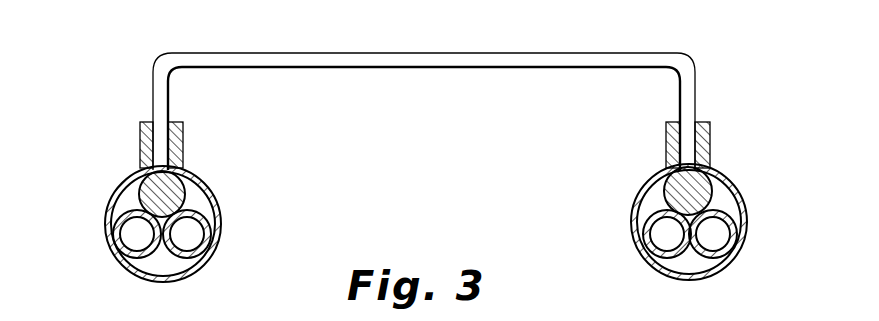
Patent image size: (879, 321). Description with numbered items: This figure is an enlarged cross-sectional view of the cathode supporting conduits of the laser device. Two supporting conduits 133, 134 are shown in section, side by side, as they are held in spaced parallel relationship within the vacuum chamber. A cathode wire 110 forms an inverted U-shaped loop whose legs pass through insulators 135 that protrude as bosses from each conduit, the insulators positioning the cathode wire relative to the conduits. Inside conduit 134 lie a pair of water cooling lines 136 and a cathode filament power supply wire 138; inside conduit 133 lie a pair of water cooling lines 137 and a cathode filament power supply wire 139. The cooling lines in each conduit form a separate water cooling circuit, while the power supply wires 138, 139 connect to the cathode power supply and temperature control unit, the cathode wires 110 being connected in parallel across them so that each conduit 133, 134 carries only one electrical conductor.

The cathode wires 110 is at (594, 53).
The insulators 135 is at (184, 127).
The supporting conduit 134 is at (112, 188).
The cathode filament power supply wire 138 is at (186, 197).
The water cooling lines 136 is at (110, 226).
The supporting conduit 133 is at (735, 179).
The cathode filament power supply wire 139 is at (666, 192).
The water cooling lines 137 is at (641, 222).